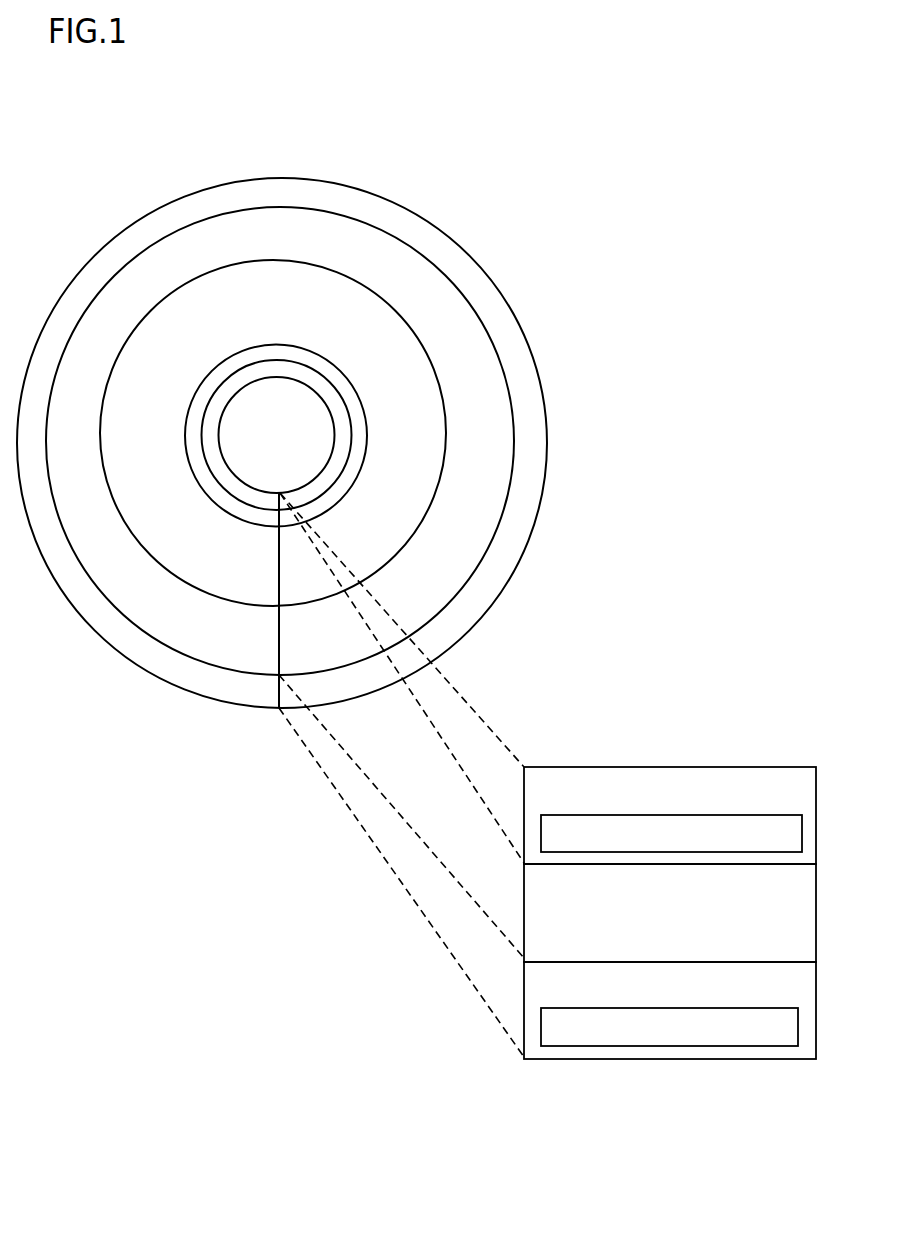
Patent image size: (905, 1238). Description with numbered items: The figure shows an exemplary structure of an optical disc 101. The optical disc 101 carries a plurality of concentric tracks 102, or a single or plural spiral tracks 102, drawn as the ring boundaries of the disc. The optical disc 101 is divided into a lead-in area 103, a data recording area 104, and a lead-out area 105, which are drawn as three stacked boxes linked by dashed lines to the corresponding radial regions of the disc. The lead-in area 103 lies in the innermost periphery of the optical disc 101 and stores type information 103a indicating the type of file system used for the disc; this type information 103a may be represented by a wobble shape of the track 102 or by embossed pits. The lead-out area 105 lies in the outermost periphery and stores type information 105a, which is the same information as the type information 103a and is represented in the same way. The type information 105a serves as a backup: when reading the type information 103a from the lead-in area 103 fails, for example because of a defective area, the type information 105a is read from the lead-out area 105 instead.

The optical disc 101 is at (368, 255).
The tracks 102 is at (448, 412).
The lead-in area 103 is at (670, 815).
The type information 103a is at (671, 833).
The data recording area 104 is at (670, 913).
The lead-out area 105 is at (670, 1010).
The type information 105a is at (669, 1027).